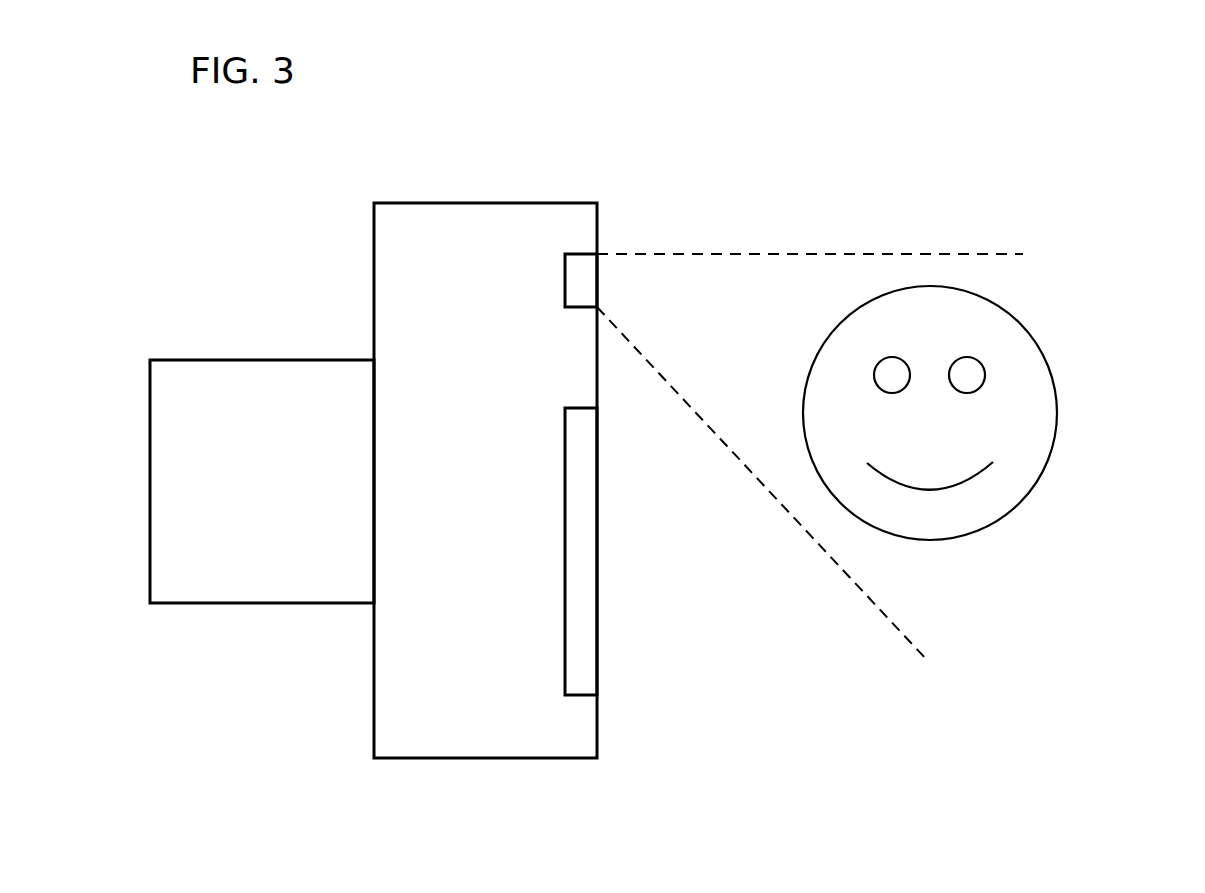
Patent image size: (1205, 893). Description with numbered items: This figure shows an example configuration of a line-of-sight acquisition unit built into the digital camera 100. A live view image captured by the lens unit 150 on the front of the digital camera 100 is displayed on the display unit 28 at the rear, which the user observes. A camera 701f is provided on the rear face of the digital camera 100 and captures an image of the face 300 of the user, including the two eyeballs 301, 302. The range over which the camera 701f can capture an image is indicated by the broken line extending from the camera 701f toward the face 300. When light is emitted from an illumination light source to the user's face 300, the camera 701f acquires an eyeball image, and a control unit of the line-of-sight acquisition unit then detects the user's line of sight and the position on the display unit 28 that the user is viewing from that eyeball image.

The digital camera 100 is at (407, 203).
The lens unit 150 is at (185, 360).
The camera 701f is at (565, 254).
The display unit 28 is at (580, 612).
The face 300 is at (1035, 338).
The eyeball 301 is at (892, 357).
The eyeball 302 is at (967, 357).